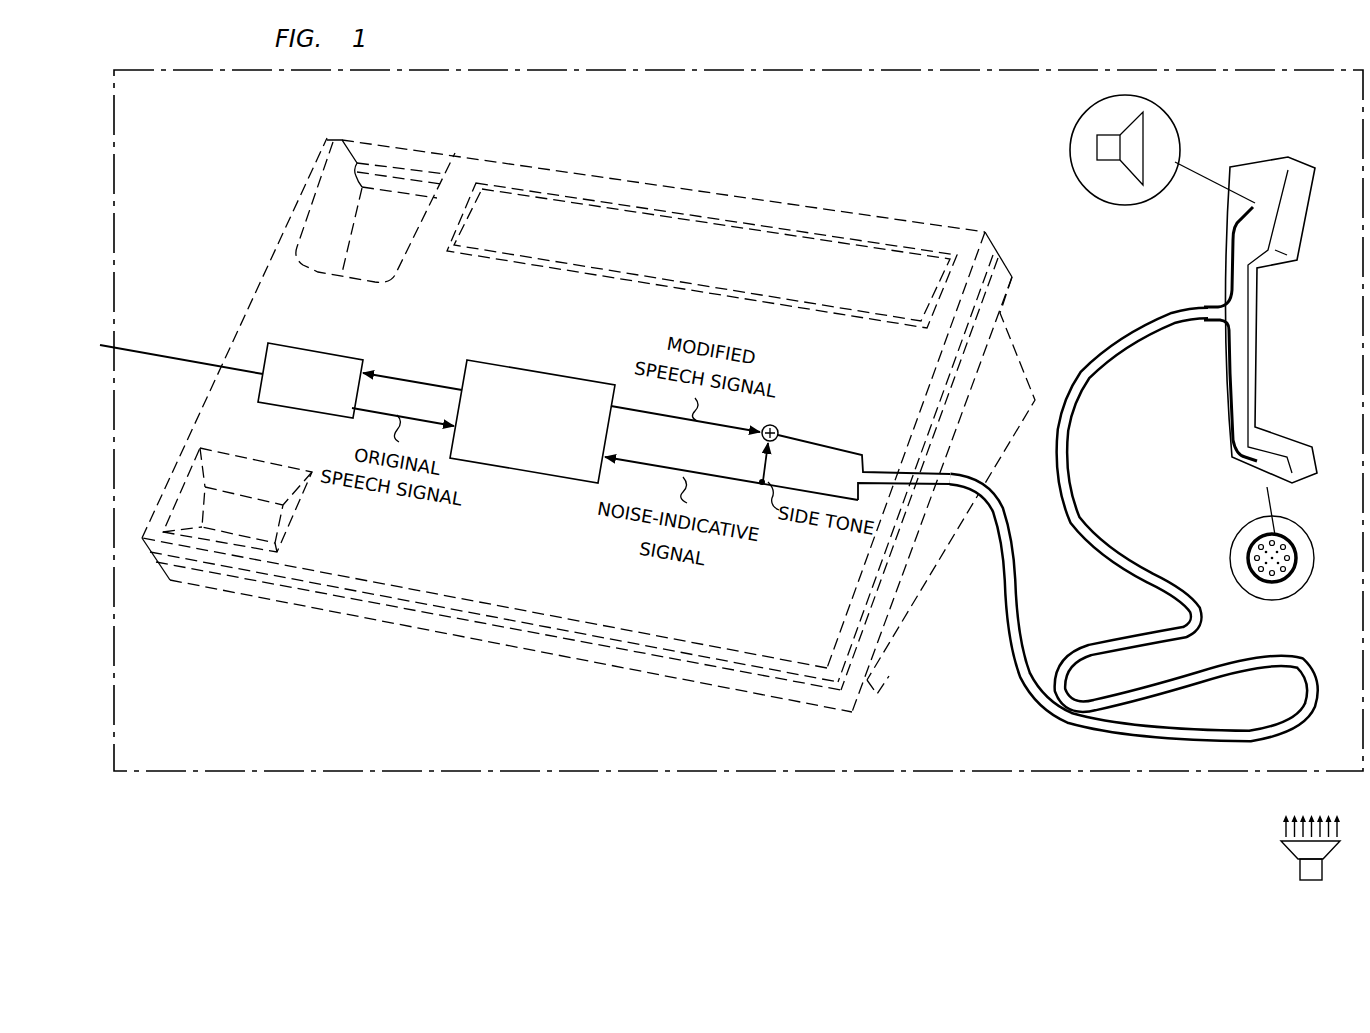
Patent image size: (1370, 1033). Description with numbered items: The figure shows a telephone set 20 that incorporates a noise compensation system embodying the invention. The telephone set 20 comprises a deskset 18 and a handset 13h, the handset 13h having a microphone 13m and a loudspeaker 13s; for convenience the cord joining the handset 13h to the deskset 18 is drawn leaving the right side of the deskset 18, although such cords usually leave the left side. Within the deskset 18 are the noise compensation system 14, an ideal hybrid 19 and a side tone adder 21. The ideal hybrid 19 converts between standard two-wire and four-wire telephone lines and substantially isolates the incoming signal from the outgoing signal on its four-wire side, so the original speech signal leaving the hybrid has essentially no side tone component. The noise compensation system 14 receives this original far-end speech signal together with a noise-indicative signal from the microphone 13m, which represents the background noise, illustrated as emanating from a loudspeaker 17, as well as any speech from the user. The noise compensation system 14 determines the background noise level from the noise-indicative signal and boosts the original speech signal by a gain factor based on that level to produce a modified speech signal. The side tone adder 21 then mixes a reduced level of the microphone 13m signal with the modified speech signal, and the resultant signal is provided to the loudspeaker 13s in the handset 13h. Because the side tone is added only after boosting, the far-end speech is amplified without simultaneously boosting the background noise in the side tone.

The loudspeaker 13s is at (1172, 127).
The handset 13h is at (1257, 350).
The microphone 13m is at (1238, 540).
The noise compensation system 14 is at (560, 377).
The loudspeaker 17 is at (1325, 848).
The deskset 18 is at (628, 178).
The ideal hybrid 19 is at (328, 355).
The telephone set 20 is at (1325, 70).
The side tone adder 21 is at (758, 442).